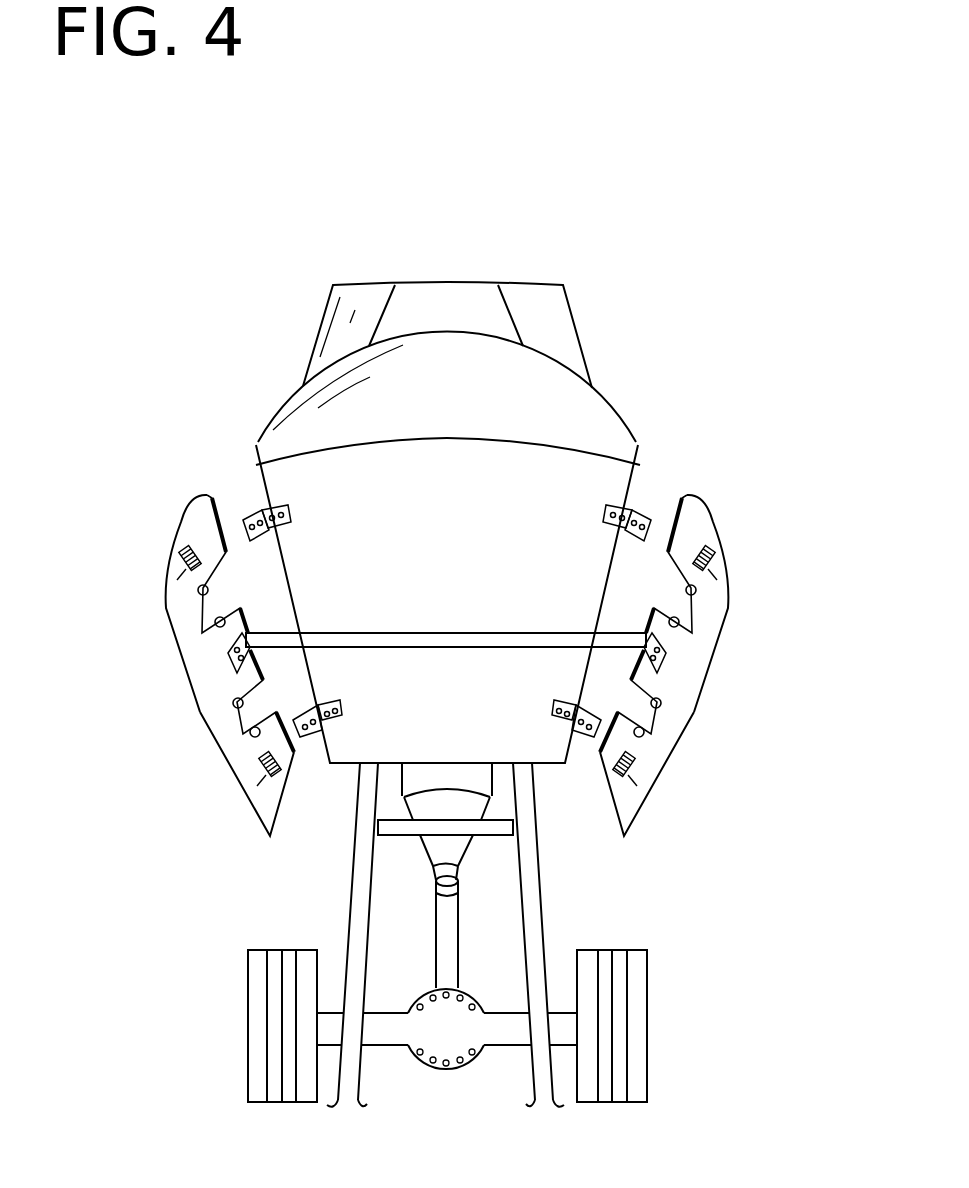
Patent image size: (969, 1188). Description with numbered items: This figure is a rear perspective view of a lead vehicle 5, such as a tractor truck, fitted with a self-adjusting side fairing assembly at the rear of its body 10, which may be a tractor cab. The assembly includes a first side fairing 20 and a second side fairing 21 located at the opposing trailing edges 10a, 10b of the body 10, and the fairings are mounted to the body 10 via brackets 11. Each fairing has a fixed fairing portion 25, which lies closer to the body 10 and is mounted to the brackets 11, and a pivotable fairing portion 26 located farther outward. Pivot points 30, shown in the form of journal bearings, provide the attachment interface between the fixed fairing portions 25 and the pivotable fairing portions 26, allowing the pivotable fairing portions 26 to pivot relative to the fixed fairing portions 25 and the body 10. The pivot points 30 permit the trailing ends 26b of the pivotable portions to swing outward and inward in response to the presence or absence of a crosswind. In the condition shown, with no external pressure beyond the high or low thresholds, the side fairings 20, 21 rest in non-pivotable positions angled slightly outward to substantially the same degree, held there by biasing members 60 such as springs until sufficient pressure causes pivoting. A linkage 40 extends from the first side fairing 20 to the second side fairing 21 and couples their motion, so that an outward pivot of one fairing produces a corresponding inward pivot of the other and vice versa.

The lead vehicle 5 is at (560, 338).
The body 10 is at (563, 415).
The trailing edge 10a is at (257, 447).
The trailing edge 10b is at (638, 443).
The first side fairing 20 is at (208, 538).
The second side fairing 21 is at (666, 522).
The fixed fairing portion 25 is at (622, 602).
The linkage 40 is at (448, 640).
The pivotable fairing portion 26 is at (193, 650).
The trailing end 26b is at (195, 693).
The pivot points 30 is at (238, 612).
The brackets 11 is at (280, 505).
The biasing members 60 is at (182, 562).